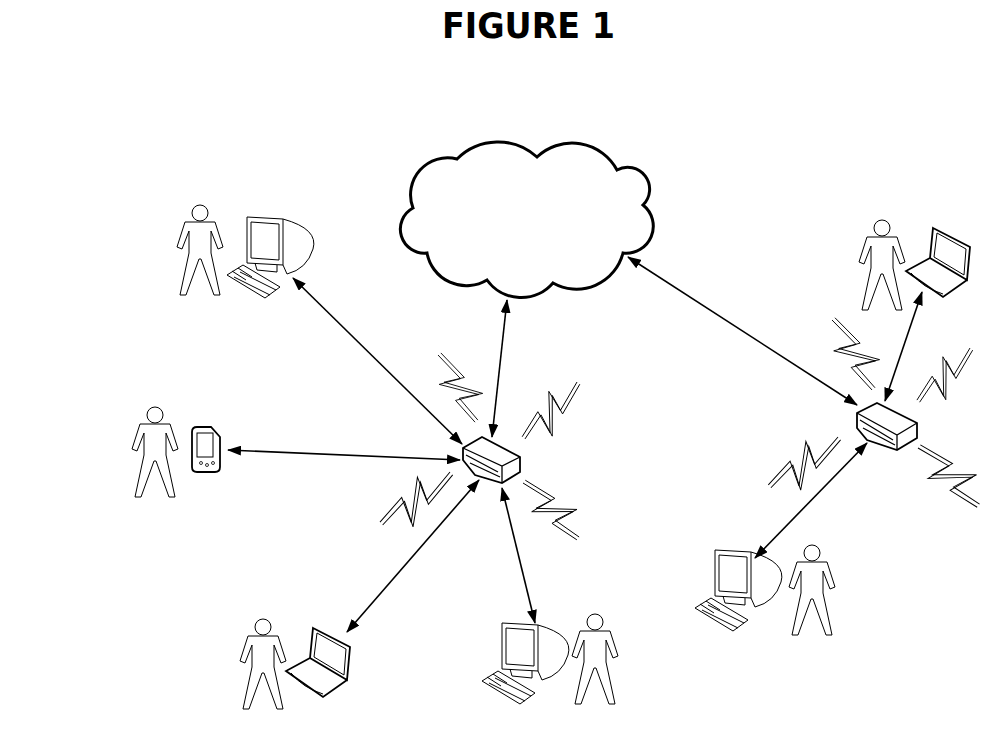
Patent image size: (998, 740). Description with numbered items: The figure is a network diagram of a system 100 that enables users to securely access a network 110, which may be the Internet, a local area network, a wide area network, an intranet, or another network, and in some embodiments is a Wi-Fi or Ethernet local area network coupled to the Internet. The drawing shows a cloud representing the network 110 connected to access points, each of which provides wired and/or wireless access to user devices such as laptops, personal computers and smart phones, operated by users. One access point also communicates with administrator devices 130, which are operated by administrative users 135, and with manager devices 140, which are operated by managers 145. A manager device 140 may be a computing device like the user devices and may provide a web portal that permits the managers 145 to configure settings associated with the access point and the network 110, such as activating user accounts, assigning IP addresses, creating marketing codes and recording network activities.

The system 100 is at (955, 125).
The network 110 is at (652, 233).
The administrator devices 130 is at (733, 552).
The administrative users 135 is at (833, 592).
The manager devices 140 is at (513, 623).
The managers 145 is at (617, 658).